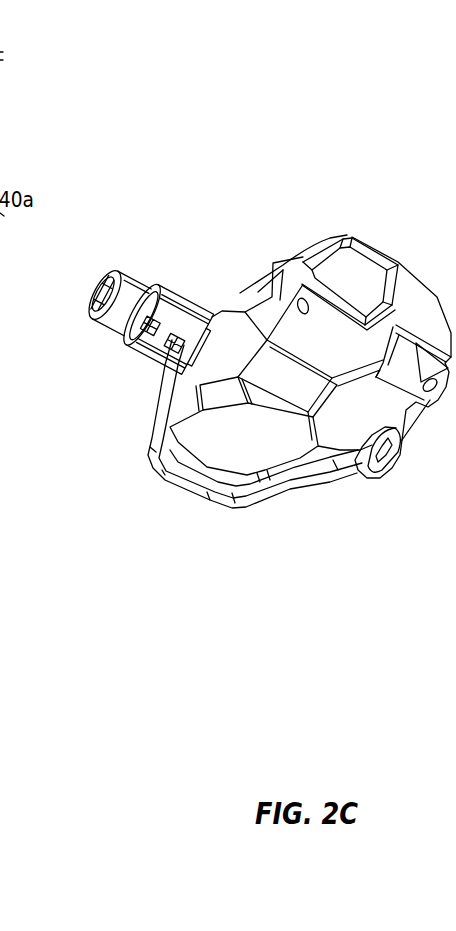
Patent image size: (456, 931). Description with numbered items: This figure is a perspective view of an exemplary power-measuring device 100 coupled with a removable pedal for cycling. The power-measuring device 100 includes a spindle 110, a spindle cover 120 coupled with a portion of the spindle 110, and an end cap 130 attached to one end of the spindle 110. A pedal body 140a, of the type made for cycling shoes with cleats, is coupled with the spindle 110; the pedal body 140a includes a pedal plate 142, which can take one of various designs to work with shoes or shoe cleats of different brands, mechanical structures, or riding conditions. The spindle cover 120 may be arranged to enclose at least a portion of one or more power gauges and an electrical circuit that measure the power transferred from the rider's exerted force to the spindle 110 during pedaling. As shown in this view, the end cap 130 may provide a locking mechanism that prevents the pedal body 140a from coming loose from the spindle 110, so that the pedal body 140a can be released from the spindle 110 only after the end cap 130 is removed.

The power-measuring device 100 is at (455, 83).
The spindle 110 is at (100, 322).
The spindle cover 120 is at (158, 362).
The end cap 130 is at (385, 478).
The pedal body 140a is at (265, 498).
The pedal plate 142 is at (350, 277).